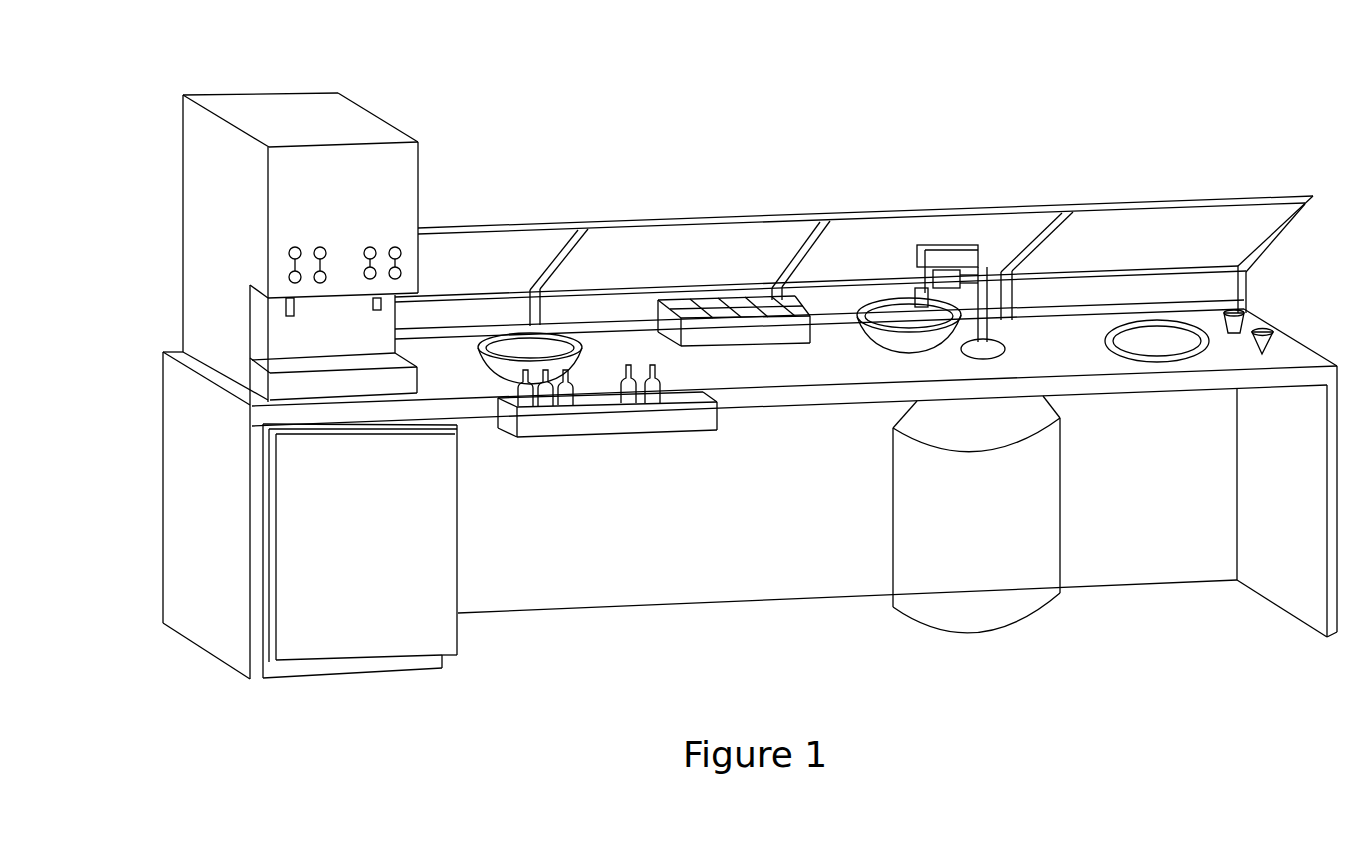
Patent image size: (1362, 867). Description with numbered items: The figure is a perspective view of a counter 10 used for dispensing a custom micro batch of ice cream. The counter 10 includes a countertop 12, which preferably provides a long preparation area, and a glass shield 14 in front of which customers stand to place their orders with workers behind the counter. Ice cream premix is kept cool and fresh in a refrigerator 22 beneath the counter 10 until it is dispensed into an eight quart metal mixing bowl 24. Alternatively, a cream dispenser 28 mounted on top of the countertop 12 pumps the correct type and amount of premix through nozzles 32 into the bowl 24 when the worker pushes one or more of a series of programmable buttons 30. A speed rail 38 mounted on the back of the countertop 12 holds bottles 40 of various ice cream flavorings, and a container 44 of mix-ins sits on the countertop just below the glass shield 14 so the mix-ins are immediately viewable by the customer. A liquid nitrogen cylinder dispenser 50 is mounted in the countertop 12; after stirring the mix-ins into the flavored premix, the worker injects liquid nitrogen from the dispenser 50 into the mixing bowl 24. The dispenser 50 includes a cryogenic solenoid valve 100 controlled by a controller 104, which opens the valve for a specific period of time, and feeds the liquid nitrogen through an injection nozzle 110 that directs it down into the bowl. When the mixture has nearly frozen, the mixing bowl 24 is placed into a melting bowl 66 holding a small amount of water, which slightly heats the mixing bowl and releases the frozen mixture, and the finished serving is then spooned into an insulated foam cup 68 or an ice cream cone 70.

The counter 10 is at (1176, 188).
The countertop 12 is at (706, 375).
The glass shield 14 is at (583, 228).
The refrigerator 22 is at (340, 485).
The mixing bowl 24 is at (517, 360).
The cream dispenser 28 is at (299, 118).
The buttons 30 is at (320, 250).
The nozzles 32 is at (378, 308).
The speed rail 38 is at (554, 432).
The bottles 40 is at (627, 402).
The container 44 is at (729, 343).
The liquid nitrogen cylinder dispenser 50 is at (951, 533).
The melting bowl 66 is at (1146, 352).
The insulated foam cup 68 is at (1262, 331).
The ice cream cone 70 is at (1238, 313).
The cryogenic solenoid valve 100 is at (972, 244).
The controller 104 is at (934, 268).
The injection nozzle 110 is at (918, 292).